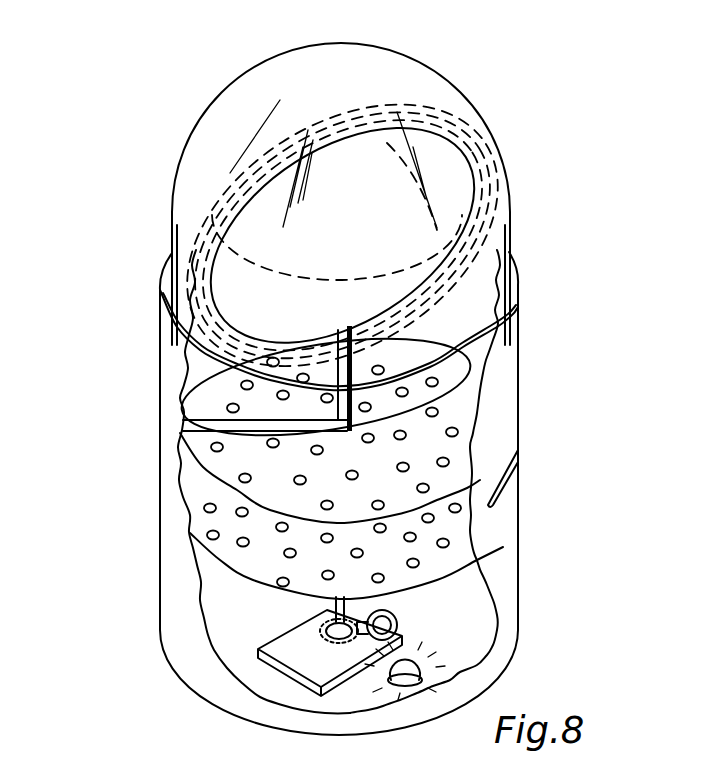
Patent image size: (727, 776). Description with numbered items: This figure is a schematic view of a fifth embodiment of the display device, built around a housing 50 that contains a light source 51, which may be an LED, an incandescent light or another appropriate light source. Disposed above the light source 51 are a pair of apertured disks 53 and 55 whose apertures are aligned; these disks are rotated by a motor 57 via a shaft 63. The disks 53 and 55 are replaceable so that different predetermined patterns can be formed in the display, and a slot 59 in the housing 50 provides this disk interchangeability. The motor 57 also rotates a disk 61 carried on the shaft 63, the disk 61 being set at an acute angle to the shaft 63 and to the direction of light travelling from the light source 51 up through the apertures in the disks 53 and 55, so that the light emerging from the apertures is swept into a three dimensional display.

The housing 50 is at (160, 574).
The light source 51 is at (467, 670).
The apertured disk 53 is at (193, 512).
The apertured disk 55 is at (213, 393).
The motor 57 is at (395, 610).
The slot 59 is at (518, 474).
The disk 61 is at (452, 150).
The shaft 63 is at (484, 364).